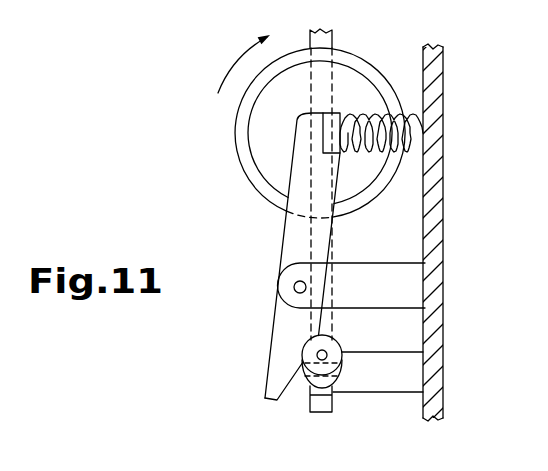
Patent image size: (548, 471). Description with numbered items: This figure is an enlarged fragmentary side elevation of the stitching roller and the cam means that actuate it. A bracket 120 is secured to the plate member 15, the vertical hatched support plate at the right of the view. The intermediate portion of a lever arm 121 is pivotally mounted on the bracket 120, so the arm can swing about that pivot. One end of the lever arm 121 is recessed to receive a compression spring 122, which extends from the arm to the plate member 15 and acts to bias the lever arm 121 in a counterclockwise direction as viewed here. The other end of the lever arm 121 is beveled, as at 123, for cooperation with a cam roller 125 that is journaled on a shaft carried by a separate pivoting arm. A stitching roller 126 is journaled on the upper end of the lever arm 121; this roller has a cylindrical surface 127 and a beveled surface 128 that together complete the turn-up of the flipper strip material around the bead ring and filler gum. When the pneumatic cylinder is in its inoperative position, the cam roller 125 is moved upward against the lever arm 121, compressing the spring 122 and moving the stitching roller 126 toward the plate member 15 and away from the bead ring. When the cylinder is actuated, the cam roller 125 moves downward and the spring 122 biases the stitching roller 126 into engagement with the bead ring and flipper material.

The plate member 15 is at (438, 193).
The bracket 120 is at (372, 273).
The lever arm 121 is at (275, 325).
The compression spring 122 is at (377, 155).
The beveled end 123 is at (297, 387).
The cam roller 125 is at (352, 372).
The stitching roller 126 is at (214, 129).
The cylindrical surface 127 is at (263, 182).
The beveled surface 128 is at (247, 160).